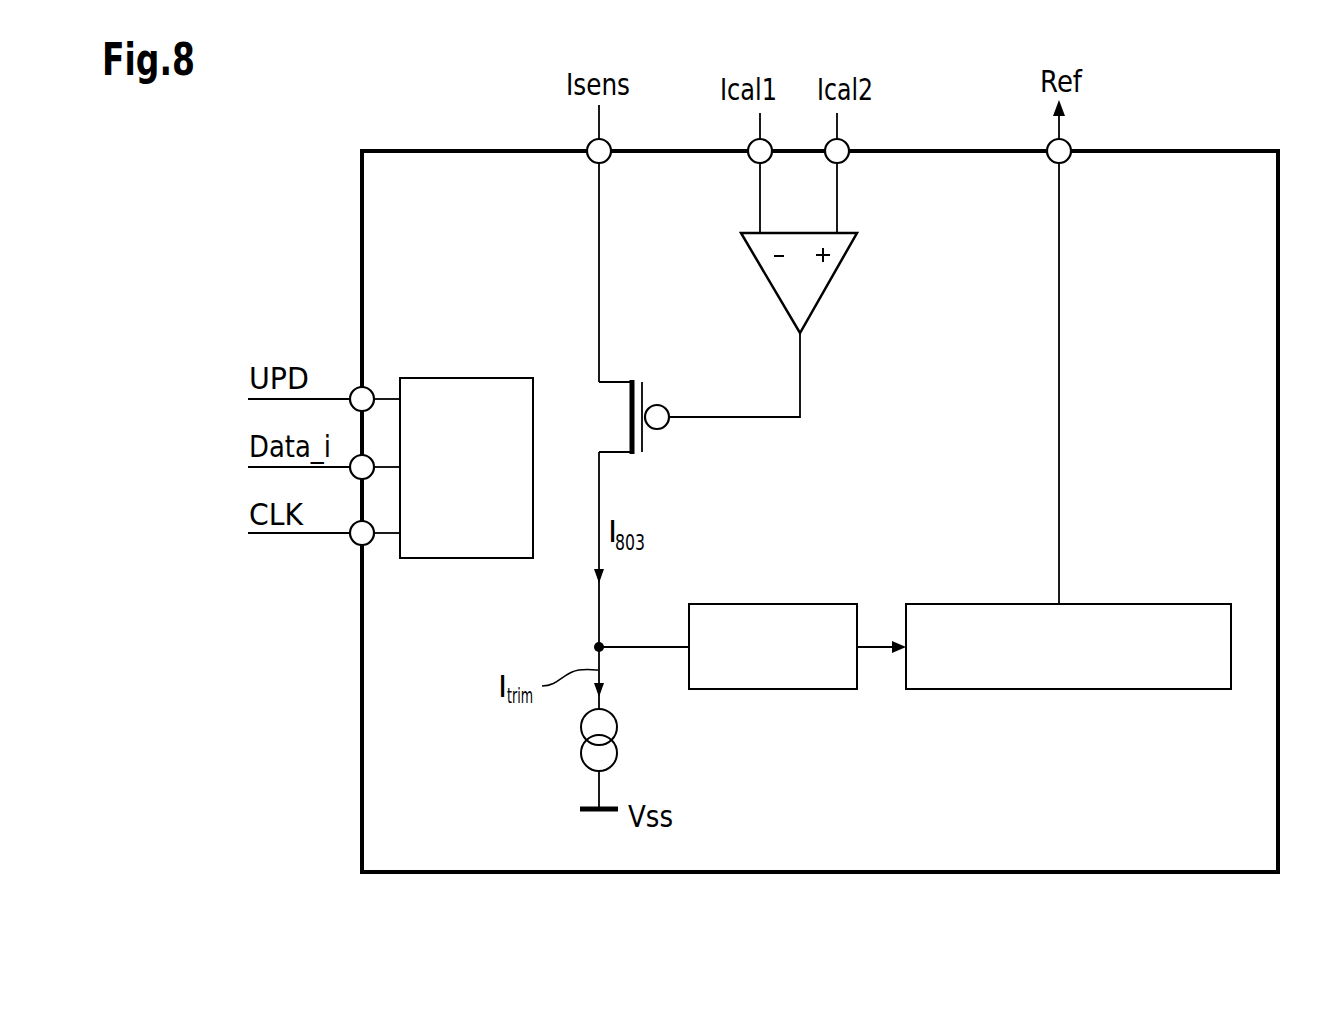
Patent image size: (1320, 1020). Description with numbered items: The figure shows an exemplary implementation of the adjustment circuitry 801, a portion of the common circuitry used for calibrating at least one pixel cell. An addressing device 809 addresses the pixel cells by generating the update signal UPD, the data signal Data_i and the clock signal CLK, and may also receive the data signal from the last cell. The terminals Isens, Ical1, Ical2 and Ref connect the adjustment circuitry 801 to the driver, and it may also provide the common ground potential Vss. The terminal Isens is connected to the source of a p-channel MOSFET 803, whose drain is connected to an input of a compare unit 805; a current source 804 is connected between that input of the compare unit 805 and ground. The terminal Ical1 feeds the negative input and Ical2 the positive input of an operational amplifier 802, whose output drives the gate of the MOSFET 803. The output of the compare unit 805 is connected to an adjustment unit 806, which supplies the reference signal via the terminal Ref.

The adjustment circuitry 801 is at (361, 252).
The operational amplifier 802 is at (815, 310).
The p-channel MOSFET 803 is at (646, 409).
The current source 804 is at (626, 740).
The compare unit 805 is at (778, 688).
The adjustment unit 806 is at (985, 689).
The addressing device 809 is at (447, 378).